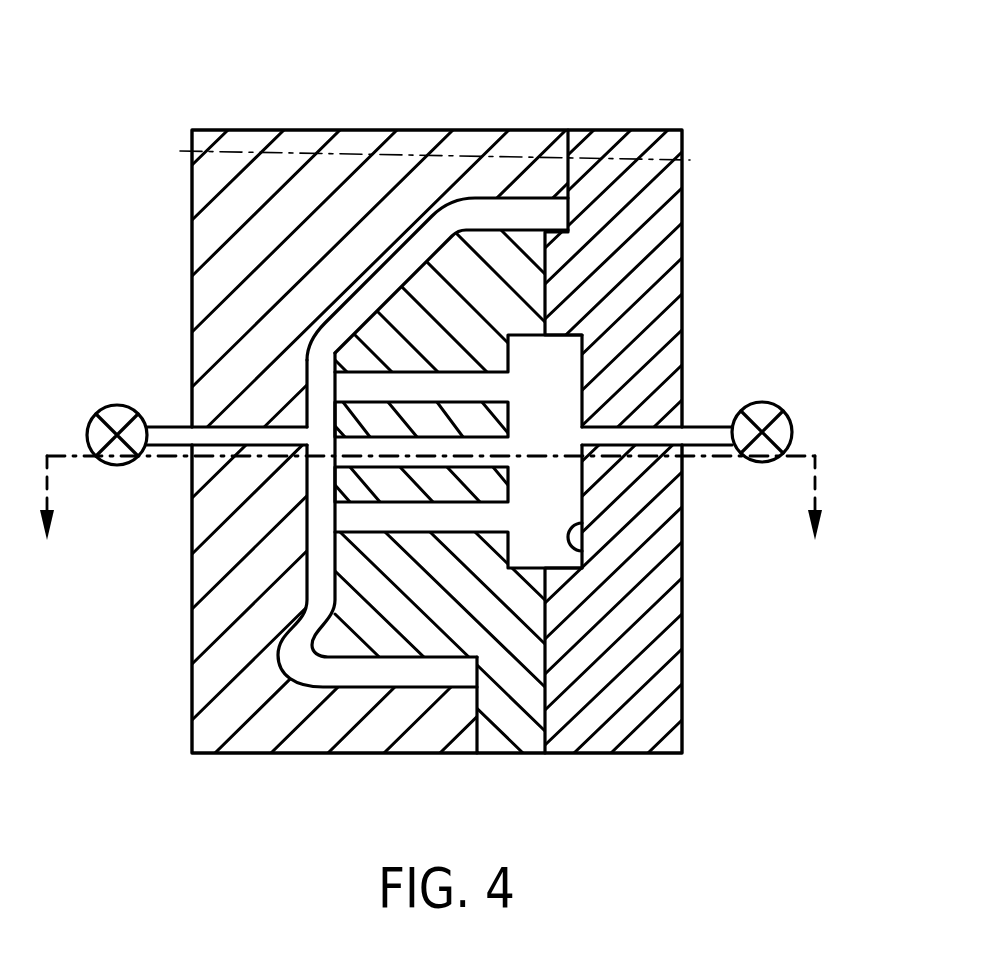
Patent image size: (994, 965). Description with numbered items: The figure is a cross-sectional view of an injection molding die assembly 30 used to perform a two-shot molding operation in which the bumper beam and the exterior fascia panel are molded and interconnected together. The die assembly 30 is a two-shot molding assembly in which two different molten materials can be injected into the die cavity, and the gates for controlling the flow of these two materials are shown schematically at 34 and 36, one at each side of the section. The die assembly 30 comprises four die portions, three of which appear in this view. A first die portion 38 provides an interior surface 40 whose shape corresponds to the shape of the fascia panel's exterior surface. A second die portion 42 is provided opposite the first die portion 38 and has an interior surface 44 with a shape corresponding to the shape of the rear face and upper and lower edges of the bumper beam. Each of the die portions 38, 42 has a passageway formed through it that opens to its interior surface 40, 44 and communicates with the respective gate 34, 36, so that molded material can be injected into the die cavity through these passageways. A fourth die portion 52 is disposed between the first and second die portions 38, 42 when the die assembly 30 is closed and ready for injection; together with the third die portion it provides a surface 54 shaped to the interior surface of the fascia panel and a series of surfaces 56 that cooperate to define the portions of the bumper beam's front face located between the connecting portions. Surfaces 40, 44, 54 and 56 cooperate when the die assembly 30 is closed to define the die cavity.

The injection molding die assembly 30 is at (755, 80).
The gate 34 is at (117, 405).
The gate 36 is at (765, 403).
The first die portion 38 is at (215, 230).
The interior surface 40 is at (412, 252).
The second die portion 42 is at (672, 244).
The interior surface 44 is at (587, 557).
The fourth die portion 52 is at (513, 724).
The surface 54 is at (322, 600).
The surfaces 56 is at (508, 420).